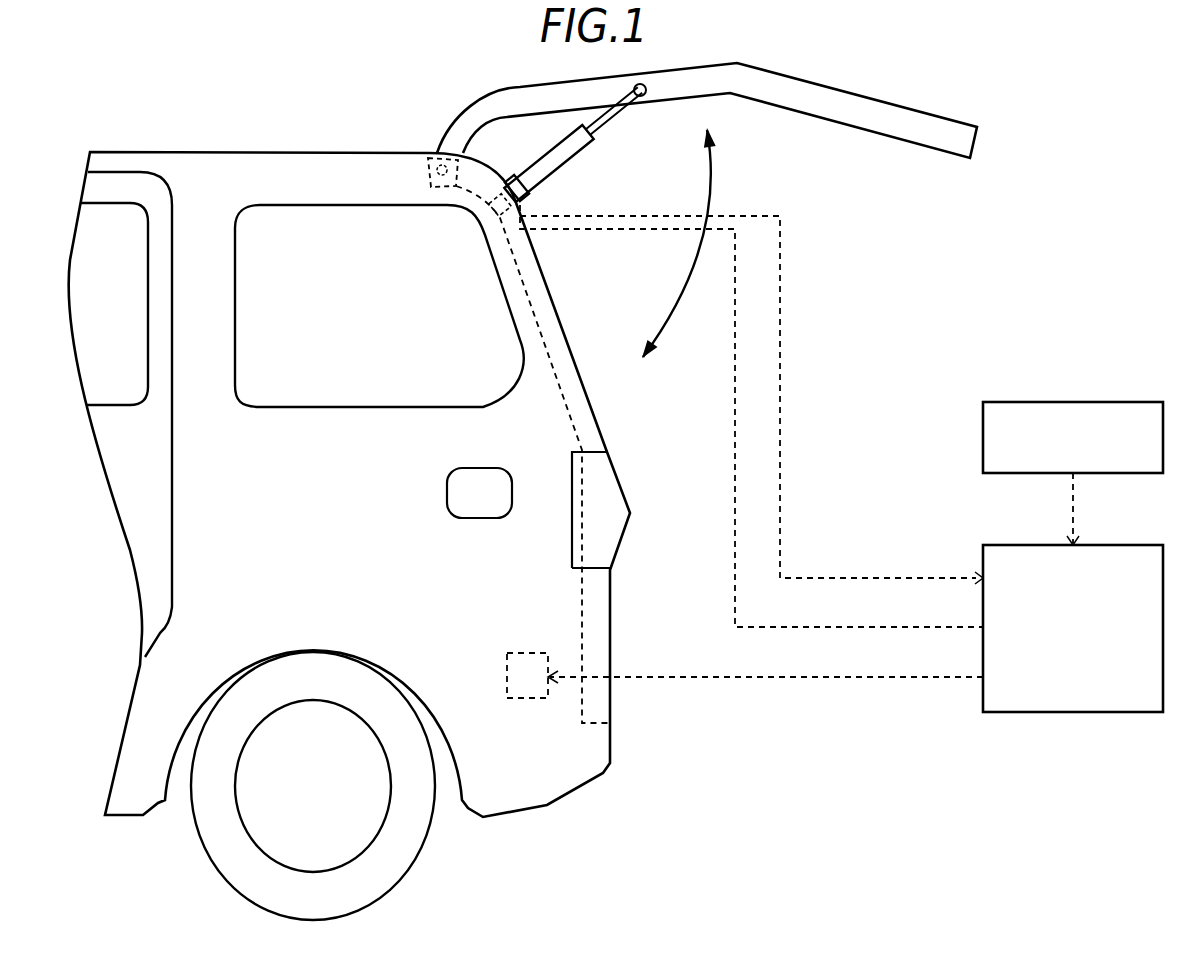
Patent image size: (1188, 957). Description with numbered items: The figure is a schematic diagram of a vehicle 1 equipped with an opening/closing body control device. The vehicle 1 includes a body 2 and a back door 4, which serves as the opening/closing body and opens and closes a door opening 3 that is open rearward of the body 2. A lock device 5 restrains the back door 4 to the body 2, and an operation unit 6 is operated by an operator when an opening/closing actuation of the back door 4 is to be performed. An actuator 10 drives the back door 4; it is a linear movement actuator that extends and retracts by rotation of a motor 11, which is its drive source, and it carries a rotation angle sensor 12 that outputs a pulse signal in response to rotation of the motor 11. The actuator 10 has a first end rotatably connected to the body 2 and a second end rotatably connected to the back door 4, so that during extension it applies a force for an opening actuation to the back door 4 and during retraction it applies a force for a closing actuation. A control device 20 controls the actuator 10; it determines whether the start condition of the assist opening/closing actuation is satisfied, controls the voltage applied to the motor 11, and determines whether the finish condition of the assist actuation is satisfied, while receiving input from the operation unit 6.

The vehicle 1 is at (58, 126).
The body 2 is at (201, 152).
The door opening 3 is at (590, 632).
The back door 4 is at (470, 110).
The lock device 5 is at (527, 698).
The operation unit 6 is at (1117, 398).
The actuator 10 is at (589, 140).
The motor 11 is at (542, 178).
The rotation angle sensor 12 is at (510, 176).
The control device 20 is at (1020, 712).